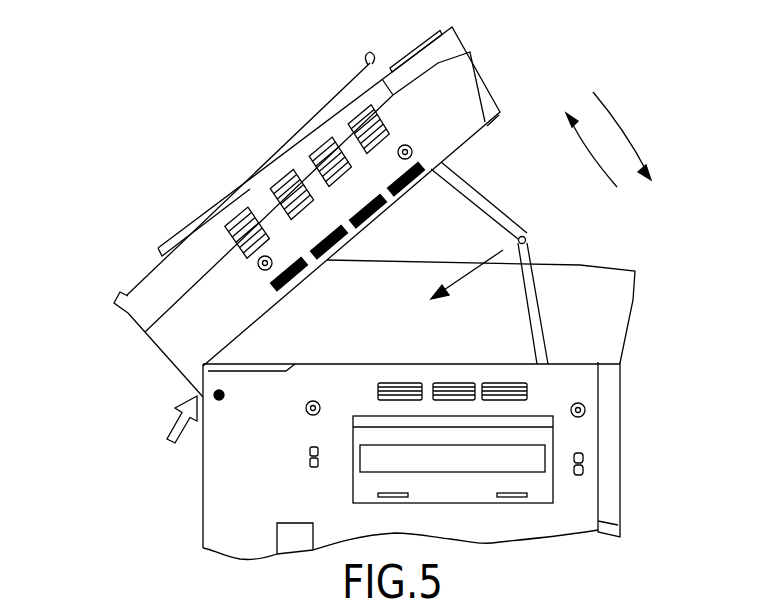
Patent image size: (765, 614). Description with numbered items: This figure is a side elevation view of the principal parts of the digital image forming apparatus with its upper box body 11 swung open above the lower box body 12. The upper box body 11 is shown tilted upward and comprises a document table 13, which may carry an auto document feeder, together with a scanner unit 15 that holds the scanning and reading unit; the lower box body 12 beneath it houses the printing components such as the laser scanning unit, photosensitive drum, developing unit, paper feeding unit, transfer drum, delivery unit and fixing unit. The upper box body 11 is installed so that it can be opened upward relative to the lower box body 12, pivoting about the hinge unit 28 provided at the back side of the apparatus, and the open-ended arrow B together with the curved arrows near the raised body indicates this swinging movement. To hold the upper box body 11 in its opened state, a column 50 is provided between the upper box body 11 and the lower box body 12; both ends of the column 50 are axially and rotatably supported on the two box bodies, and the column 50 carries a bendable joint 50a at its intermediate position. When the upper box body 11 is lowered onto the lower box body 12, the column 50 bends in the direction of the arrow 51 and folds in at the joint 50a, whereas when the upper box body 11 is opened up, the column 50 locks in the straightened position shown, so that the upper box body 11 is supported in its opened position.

The upper box body 11 is at (447, 19).
The lower box body 12 is at (638, 478).
The document table 13 is at (121, 306).
The scanner unit 15 is at (163, 355).
The hinge unit 28 is at (163, 403).
The column 50 is at (486, 206).
The joint 50a is at (525, 236).
The arrow 51 is at (463, 281).
The direction B is at (174, 434).